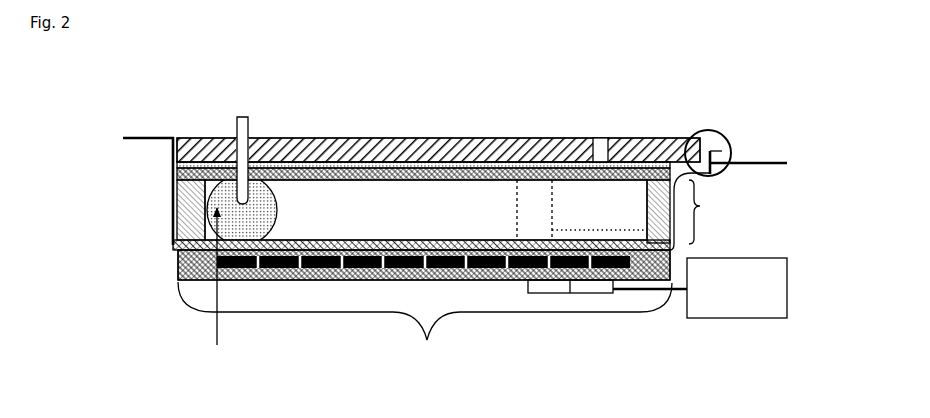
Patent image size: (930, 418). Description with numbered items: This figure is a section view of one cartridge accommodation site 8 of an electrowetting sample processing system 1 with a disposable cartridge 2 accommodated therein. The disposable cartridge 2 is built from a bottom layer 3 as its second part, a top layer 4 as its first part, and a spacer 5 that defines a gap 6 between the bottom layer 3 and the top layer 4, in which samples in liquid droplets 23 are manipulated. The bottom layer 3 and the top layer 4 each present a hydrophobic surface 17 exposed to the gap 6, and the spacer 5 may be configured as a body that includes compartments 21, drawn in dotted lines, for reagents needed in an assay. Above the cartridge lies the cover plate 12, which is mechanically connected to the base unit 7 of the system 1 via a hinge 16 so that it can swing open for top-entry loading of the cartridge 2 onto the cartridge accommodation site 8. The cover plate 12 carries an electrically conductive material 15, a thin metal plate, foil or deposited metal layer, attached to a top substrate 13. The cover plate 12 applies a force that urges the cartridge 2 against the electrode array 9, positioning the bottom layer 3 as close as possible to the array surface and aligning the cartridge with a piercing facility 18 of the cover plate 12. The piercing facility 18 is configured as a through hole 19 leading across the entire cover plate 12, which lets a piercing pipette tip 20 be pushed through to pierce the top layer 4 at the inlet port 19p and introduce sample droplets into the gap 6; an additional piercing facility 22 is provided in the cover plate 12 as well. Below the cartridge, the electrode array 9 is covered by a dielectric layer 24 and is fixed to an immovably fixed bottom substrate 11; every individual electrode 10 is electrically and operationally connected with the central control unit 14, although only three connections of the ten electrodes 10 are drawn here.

The electrowetting sample processing system 1 is at (741, 84).
The disposable cartridge 2 is at (695, 211).
The bottom layer 3 is at (177, 246).
The top layer 4 is at (177, 177).
The spacer 5 is at (176, 209).
The gap 6 is at (327, 215).
The base unit 7 is at (147, 138).
The cartridge accommodation site 8 is at (425, 325).
The electrode array 9 is at (648, 283).
The electrode 10 is at (493, 265).
The bottom substrate 11 is at (447, 300).
The cover plate 12 is at (733, 157).
The top substrate 13 is at (343, 138).
The central control unit 14 is at (729, 300).
The electrically conductive material 15 is at (410, 166).
The hinge 16 is at (723, 130).
The hydrophobic surface 17 is at (426, 179).
The piercing facility 18 is at (196, 116).
The through hole 19 is at (236, 139).
The inlet port 19p is at (242, 210).
The piercing pipette tip 20 is at (249, 139).
The compartment 21 is at (618, 215).
The additional piercing facility 22 is at (591, 119).
The liquid droplet 23 is at (230, 207).
The dielectric layer 24 is at (214, 287).